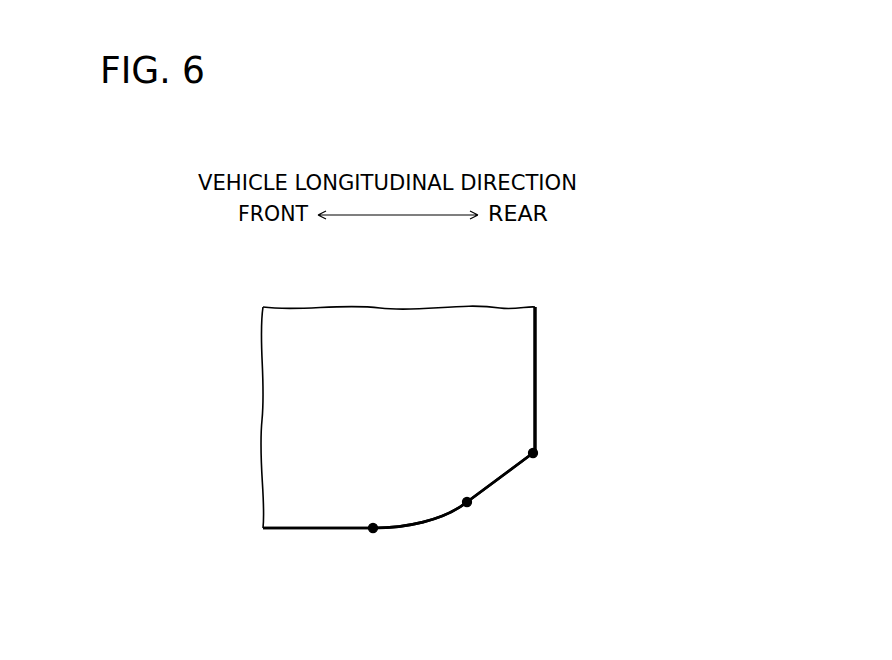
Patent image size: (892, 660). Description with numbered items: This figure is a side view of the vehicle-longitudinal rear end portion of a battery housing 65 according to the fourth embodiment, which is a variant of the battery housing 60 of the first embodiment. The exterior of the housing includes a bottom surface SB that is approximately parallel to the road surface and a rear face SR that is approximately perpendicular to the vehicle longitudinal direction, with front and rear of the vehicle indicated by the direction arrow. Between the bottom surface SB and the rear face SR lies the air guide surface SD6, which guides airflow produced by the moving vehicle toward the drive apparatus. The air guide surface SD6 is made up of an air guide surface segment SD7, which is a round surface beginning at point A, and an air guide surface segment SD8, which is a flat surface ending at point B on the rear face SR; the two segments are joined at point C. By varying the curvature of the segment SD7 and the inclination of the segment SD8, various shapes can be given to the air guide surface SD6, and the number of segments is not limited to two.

The battery housing 65 is at (438, 330).
The battery housing 60 is at (399, 395).
The bottom surface SB is at (304, 529).
The rear face SR is at (536, 368).
The air guide surface SD6 is at (556, 518).
The air guide surface segment SD7 is at (438, 518).
The air guide surface segment SD8 is at (502, 480).